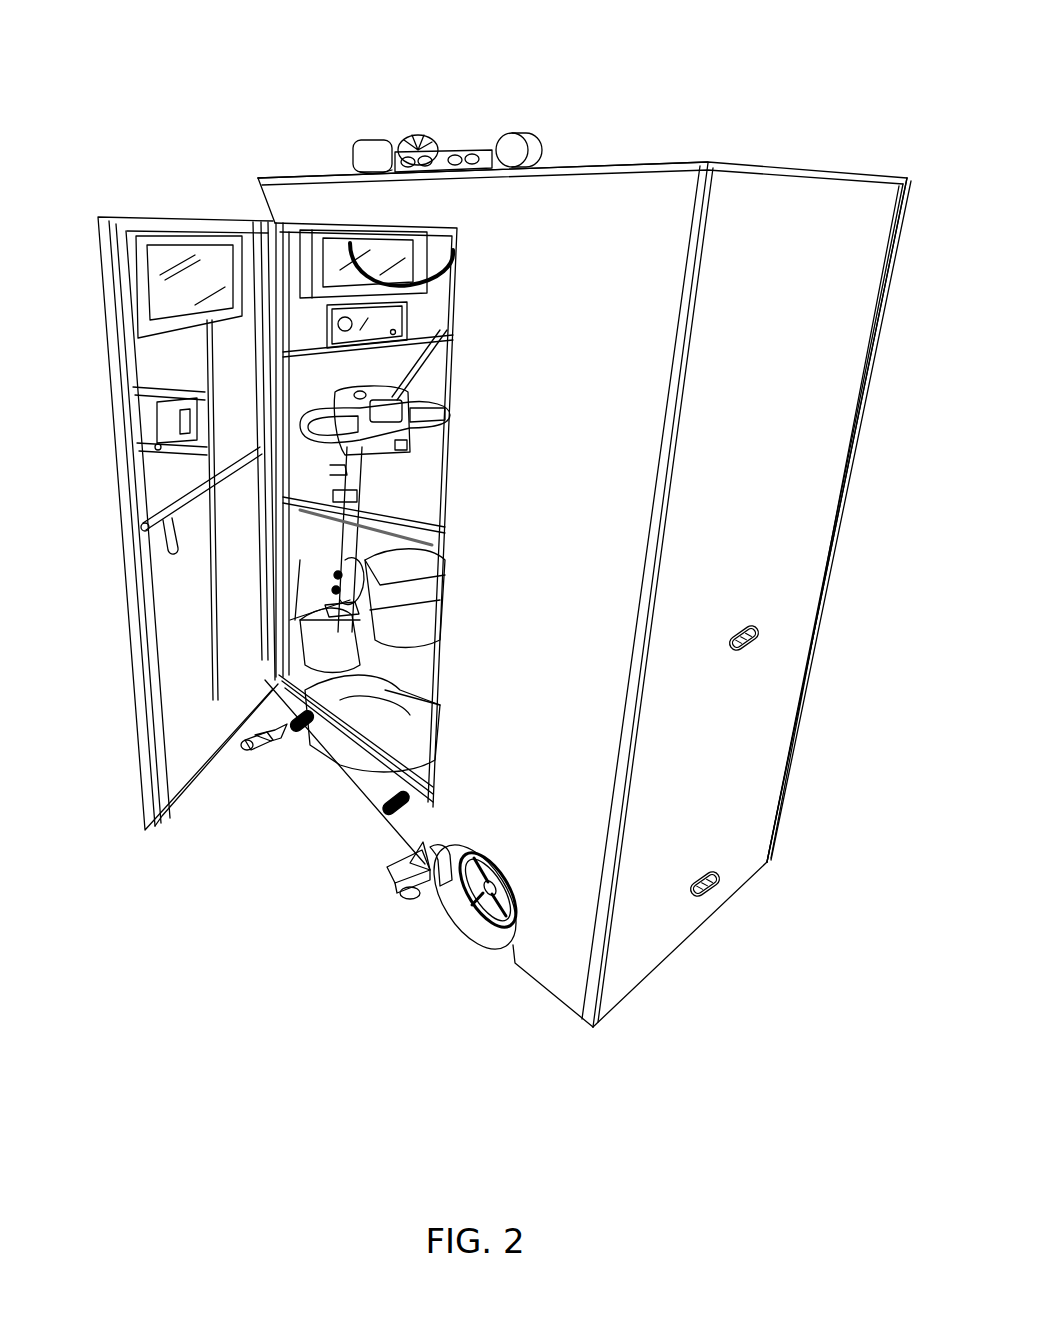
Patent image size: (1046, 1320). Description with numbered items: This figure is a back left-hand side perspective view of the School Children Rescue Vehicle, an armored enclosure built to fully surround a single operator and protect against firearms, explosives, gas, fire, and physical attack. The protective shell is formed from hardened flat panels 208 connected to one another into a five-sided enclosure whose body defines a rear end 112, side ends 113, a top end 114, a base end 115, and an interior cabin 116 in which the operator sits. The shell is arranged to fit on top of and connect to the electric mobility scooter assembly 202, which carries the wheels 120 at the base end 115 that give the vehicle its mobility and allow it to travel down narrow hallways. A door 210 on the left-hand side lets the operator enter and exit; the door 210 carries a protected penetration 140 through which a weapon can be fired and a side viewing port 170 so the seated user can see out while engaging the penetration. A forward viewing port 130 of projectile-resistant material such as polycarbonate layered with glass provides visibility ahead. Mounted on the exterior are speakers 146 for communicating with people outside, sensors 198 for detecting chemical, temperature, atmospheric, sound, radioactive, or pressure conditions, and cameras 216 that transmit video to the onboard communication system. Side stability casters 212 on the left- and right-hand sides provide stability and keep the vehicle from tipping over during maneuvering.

The rear end 112 is at (835, 440).
The side ends 113 is at (633, 185).
The top end 114 is at (765, 160).
The base end 115 is at (355, 818).
The interior cabin 116 is at (297, 253).
The wheels 120 is at (485, 930).
The viewing port 130 is at (340, 240).
The protected penetration 140 is at (383, 305).
The speakers 146 is at (375, 138).
The side viewing port 170 is at (190, 247).
The sensors 198 is at (465, 150).
The electric mobility scooter assembly 202 is at (385, 690).
The hardened flat panels 208 is at (843, 274).
The door 210 is at (140, 775).
The side stability casters 212 is at (250, 745).
The cameras 216 is at (758, 636).